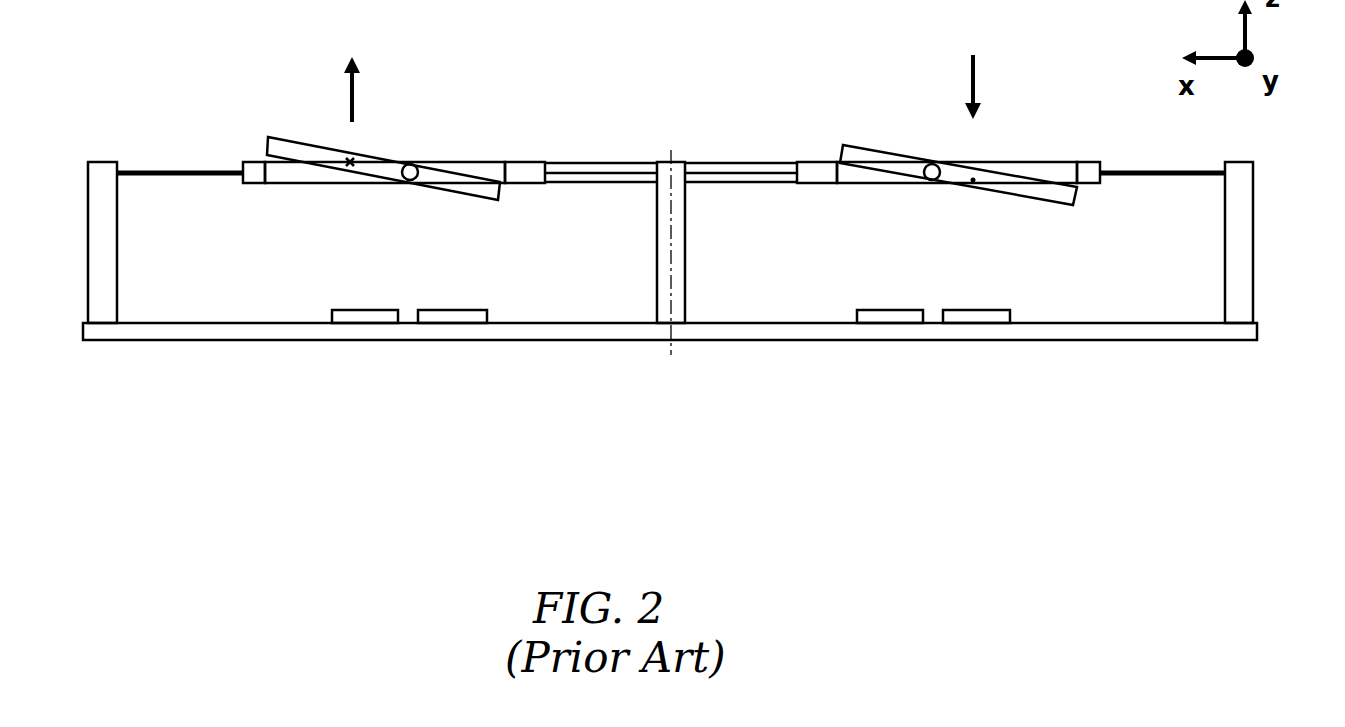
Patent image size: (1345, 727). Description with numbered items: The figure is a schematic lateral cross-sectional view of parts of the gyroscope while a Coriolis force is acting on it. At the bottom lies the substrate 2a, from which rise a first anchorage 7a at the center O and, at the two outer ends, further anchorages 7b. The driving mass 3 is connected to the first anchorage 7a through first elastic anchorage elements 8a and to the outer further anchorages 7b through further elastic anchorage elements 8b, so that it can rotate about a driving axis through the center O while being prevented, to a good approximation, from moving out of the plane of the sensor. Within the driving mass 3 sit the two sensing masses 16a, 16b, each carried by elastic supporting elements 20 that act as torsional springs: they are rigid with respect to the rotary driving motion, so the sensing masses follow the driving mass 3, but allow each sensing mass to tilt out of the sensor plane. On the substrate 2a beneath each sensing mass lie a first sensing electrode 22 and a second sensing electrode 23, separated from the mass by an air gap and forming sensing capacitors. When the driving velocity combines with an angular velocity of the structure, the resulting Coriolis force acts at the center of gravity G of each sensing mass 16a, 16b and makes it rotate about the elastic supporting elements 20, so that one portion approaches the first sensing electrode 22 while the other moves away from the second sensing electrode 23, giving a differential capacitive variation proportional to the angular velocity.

The substrate 2a is at (1258, 332).
The driving mass 3 is at (1090, 170).
The first anchorage 7a is at (682, 222).
The further anchorages 7b is at (100, 225).
The first elastic anchorage elements 8a is at (600, 162).
The further elastic anchorage elements 8b is at (165, 168).
The sensing mass 16a is at (285, 146).
The sensing mass 16b is at (1047, 196).
The elastic supporting elements 20 is at (418, 161).
The first sensing electrode 22 is at (355, 320).
The second sensing electrode 23 is at (452, 320).